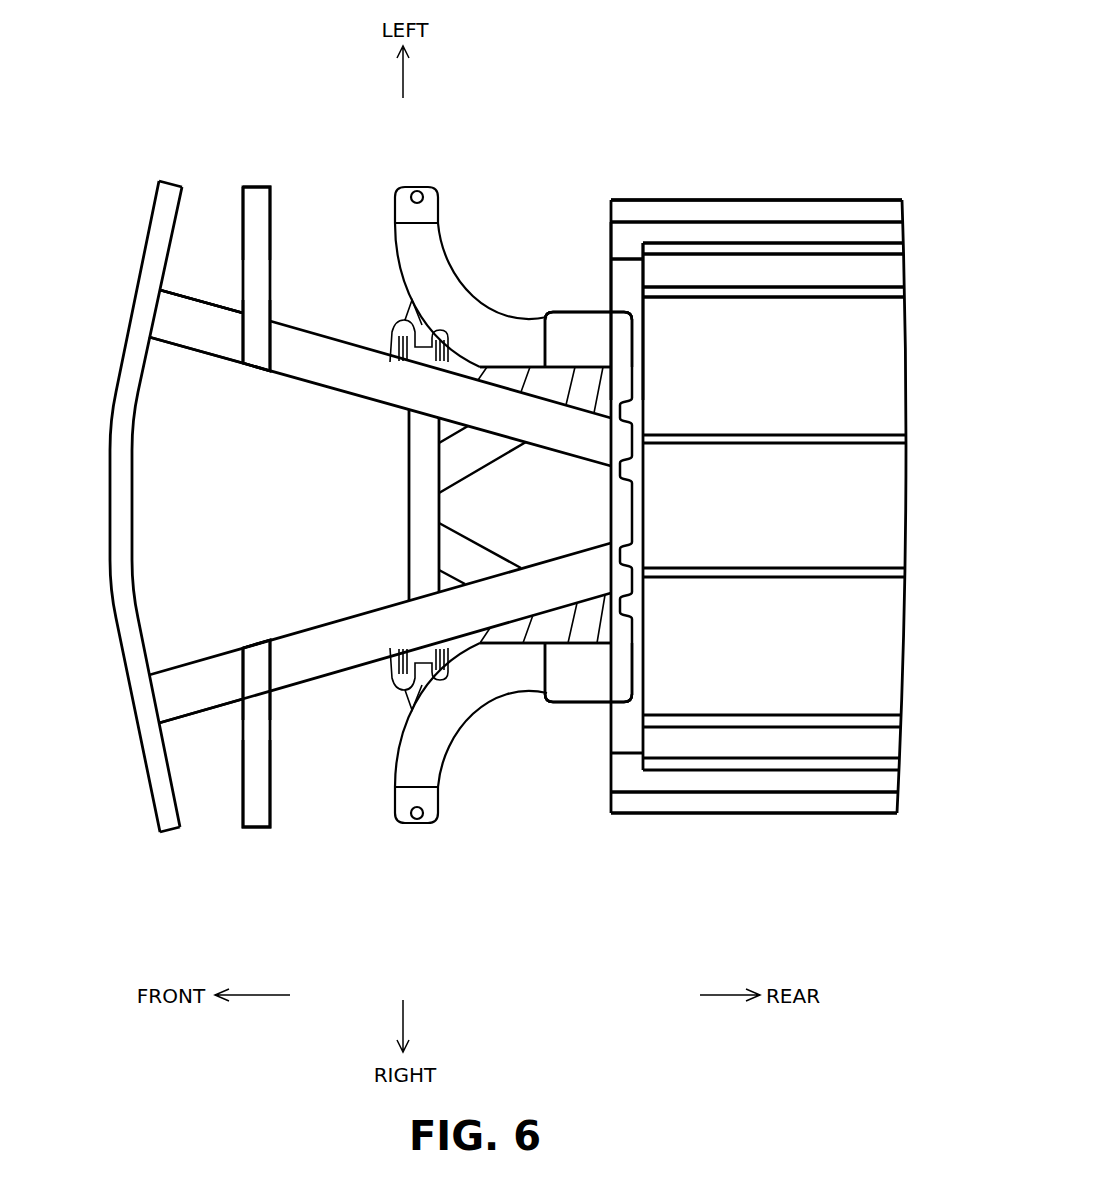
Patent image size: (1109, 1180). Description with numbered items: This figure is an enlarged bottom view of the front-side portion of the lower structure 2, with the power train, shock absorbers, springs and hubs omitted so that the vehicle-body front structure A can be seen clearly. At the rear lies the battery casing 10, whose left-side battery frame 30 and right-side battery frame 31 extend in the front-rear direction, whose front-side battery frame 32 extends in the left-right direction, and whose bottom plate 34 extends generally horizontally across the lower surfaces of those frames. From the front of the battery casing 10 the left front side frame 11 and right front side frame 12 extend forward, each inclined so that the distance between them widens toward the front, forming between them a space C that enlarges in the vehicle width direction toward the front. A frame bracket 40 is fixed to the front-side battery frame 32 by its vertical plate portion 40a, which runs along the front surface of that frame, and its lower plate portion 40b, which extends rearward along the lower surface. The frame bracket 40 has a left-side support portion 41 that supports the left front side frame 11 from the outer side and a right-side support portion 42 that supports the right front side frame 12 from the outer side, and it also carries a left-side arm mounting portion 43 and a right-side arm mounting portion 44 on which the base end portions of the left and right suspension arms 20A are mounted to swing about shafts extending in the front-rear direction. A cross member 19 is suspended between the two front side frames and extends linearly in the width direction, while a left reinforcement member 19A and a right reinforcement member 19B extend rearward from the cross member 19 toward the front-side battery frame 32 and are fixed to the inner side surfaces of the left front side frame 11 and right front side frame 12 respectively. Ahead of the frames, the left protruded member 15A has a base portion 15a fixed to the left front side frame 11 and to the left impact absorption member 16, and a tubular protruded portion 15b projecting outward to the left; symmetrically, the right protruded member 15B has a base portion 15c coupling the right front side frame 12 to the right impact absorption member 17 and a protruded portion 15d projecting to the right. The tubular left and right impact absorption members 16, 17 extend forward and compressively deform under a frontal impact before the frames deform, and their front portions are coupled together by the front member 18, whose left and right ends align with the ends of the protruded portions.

The lower structure 2 is at (725, 107).
The battery casing 10 is at (743, 826).
The left front side frame 11 is at (312, 333).
The right front side frame 12 is at (297, 687).
The left protruded member 15A is at (243, 185).
The right protruded member 15B is at (270, 827).
The base portion 15a is at (252, 348).
The protruded portion 15b is at (257, 215).
The base portion 15c is at (253, 673).
The protruded portion 15d is at (255, 780).
The left impact absorption member 16 is at (207, 300).
The right impact absorption member 17 is at (200, 715).
The front member 18 is at (156, 290).
The cross member 19 is at (409, 565).
The left reinforcement member 19A is at (502, 462).
The right reinforcement member 19B is at (490, 540).
The suspension arm 20A is at (487, 300).
The left-side battery frame 30 is at (825, 815).
The right-side battery frame 31 is at (775, 200).
The front-side battery frame 32 is at (628, 287).
The bottom plate 34 is at (843, 313).
The frame bracket 40 is at (586, 298).
The vertical plate portion 40a is at (600, 312).
The lower plate portion 40b is at (620, 690).
The left-side support portion 41 is at (513, 388).
The right-side support portion 42 is at (530, 695).
The left-side arm mounting portion 43 is at (565, 340).
The right-side arm mounting portion 44 is at (585, 680).
The vehicle-body front structure A is at (130, 744).
The space C is at (320, 503).